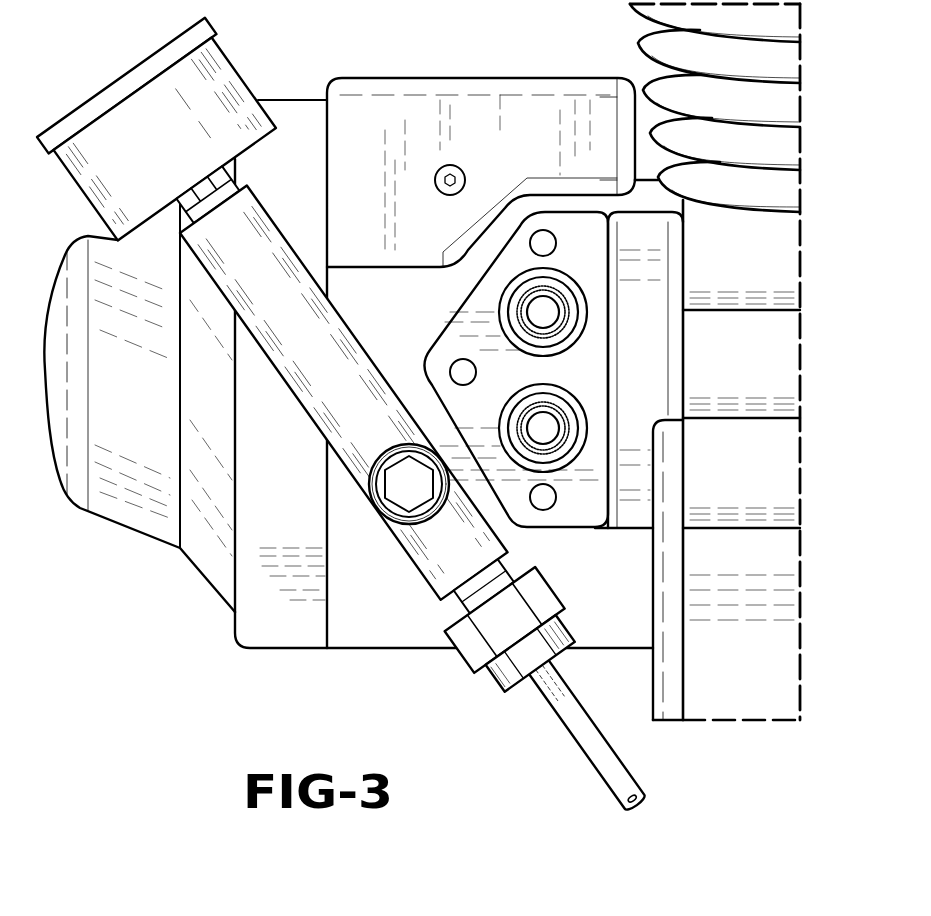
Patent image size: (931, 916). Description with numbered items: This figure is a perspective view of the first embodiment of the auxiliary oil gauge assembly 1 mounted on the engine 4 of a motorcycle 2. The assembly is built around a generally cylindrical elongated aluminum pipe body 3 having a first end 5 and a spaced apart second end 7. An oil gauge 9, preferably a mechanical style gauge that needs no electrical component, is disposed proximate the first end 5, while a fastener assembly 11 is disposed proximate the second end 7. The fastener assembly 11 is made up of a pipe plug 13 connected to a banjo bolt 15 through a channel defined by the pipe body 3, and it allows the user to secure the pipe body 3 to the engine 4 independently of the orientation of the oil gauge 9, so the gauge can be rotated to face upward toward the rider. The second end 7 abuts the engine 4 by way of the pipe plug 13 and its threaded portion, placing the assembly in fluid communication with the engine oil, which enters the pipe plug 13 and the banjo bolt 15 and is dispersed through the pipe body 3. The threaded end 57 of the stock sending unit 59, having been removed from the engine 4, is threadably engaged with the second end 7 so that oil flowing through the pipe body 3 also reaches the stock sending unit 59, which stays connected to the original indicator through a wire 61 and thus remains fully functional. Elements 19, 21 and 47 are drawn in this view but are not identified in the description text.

The auxiliary oil gauge assembly 1 is at (302, 392).
The motorcycle 2 is at (197, 585).
The pipe body 3 is at (345, 316).
The engine 4 is at (361, 636).
The first end 5 is at (267, 192).
The second end 7 is at (516, 546).
The oil gauge 9 is at (112, 78).
The fastener assembly 11 is at (346, 491).
The pipe plug 13 is at (395, 443).
The banjo bolt 15 is at (349, 491).
The hex socket 19 is at (406, 484).
The retaining ring 21 is at (396, 446).
The o-ring 47 is at (423, 521).
The threaded end 57 is at (468, 583).
The stock sending unit 59 is at (463, 668).
The wire 61 is at (584, 757).